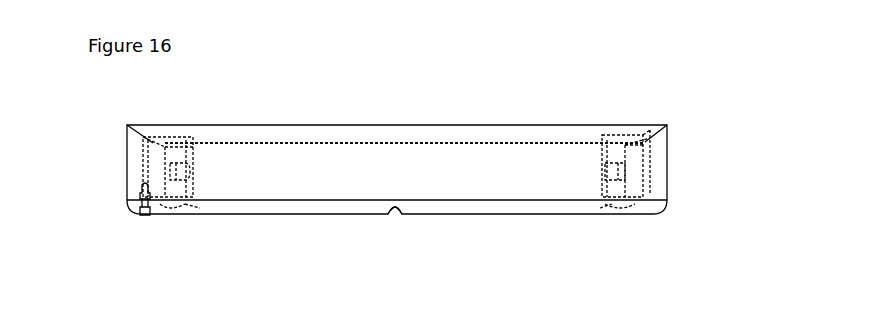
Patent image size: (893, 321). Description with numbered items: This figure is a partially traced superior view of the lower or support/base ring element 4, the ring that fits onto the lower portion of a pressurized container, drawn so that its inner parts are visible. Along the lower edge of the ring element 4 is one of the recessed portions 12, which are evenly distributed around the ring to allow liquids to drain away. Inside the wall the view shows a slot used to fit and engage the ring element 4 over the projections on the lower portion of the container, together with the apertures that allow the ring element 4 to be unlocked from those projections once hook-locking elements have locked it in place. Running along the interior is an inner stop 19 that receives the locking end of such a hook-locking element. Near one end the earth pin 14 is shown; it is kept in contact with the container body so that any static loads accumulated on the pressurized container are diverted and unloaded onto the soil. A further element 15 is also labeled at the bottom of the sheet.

The lower or support/base ring element 4 is at (611, 118).
The recessed portion 12 is at (398, 210).
The earth pin 14 is at (140, 213).
The base 15 is at (310, 317).
The inner stop 19 is at (417, 143).